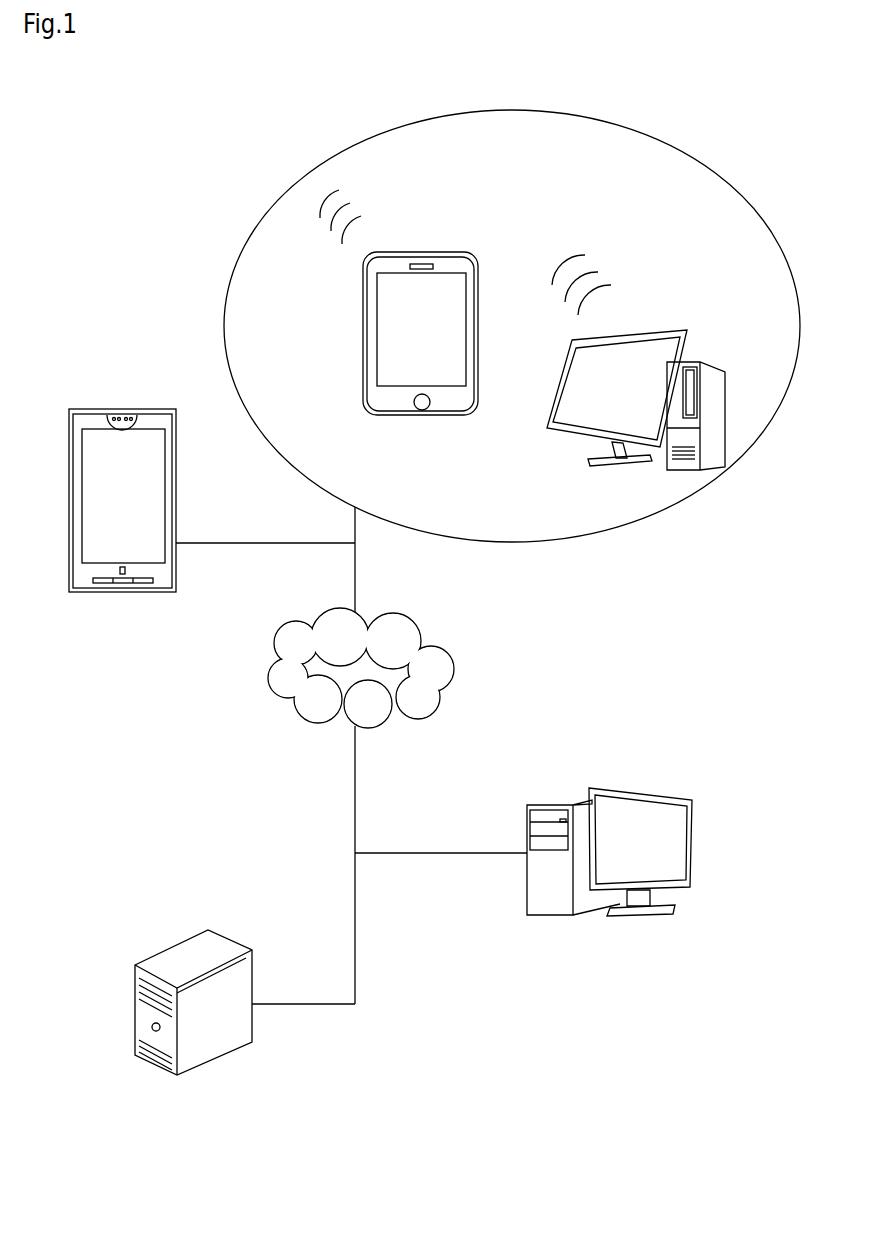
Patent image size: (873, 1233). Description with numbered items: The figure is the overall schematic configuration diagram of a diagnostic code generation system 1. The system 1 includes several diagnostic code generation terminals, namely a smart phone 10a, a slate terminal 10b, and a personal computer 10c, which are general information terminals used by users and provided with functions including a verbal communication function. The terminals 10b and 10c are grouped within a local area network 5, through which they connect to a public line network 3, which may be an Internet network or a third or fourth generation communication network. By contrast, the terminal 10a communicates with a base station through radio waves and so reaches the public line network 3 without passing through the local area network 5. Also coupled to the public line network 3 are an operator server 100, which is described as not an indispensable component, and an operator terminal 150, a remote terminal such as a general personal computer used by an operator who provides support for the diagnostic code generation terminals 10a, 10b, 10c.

The diagnostic code generation system 1 is at (503, 1058).
The public line network 3 is at (428, 613).
The local area network 5 is at (613, 533).
The diagnostic code generation terminal 10a is at (119, 410).
The diagnostic code generation terminal 10b is at (452, 252).
The diagnostic code generation terminal 10c is at (675, 330).
The operator server 100 is at (208, 930).
The operator terminal 150 is at (672, 790).